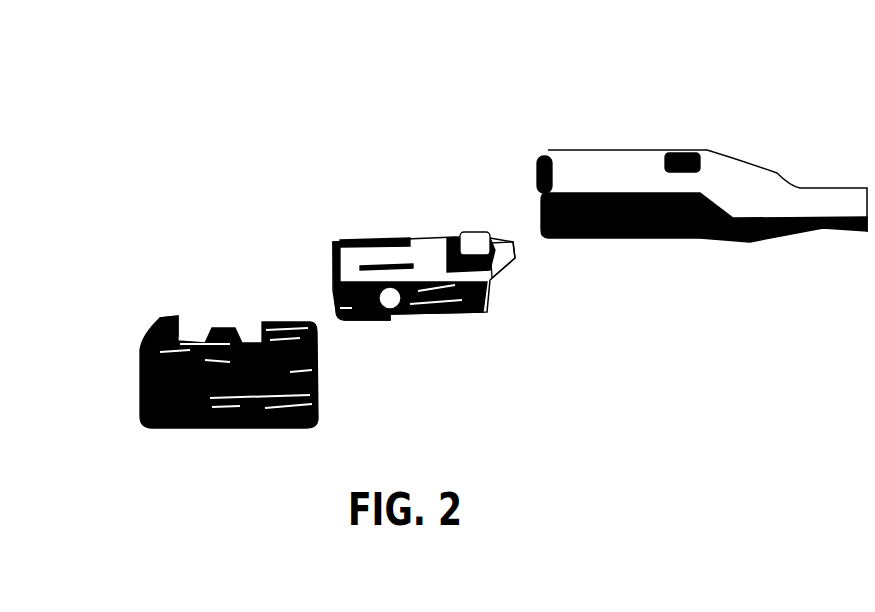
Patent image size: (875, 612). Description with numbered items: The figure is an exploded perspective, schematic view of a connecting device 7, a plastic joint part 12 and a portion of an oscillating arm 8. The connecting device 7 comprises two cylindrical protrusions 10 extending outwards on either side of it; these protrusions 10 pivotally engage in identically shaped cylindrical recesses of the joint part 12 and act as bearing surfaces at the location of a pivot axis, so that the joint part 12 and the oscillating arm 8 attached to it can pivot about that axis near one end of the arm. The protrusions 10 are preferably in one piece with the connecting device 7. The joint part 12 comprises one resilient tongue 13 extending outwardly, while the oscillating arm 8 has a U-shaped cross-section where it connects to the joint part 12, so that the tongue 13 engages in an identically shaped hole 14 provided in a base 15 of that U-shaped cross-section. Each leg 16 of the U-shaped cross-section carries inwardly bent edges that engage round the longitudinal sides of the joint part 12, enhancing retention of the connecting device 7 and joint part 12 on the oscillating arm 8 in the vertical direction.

The connecting device 7 is at (167, 317).
The oscillating arm 8 is at (676, 211).
The cylindrical protrusions 10 is at (220, 322).
The joint part 12 is at (355, 236).
The resilient tongue 13 is at (477, 232).
The hole 14 is at (692, 156).
The base 15 is at (590, 158).
The legs 16 is at (539, 167).